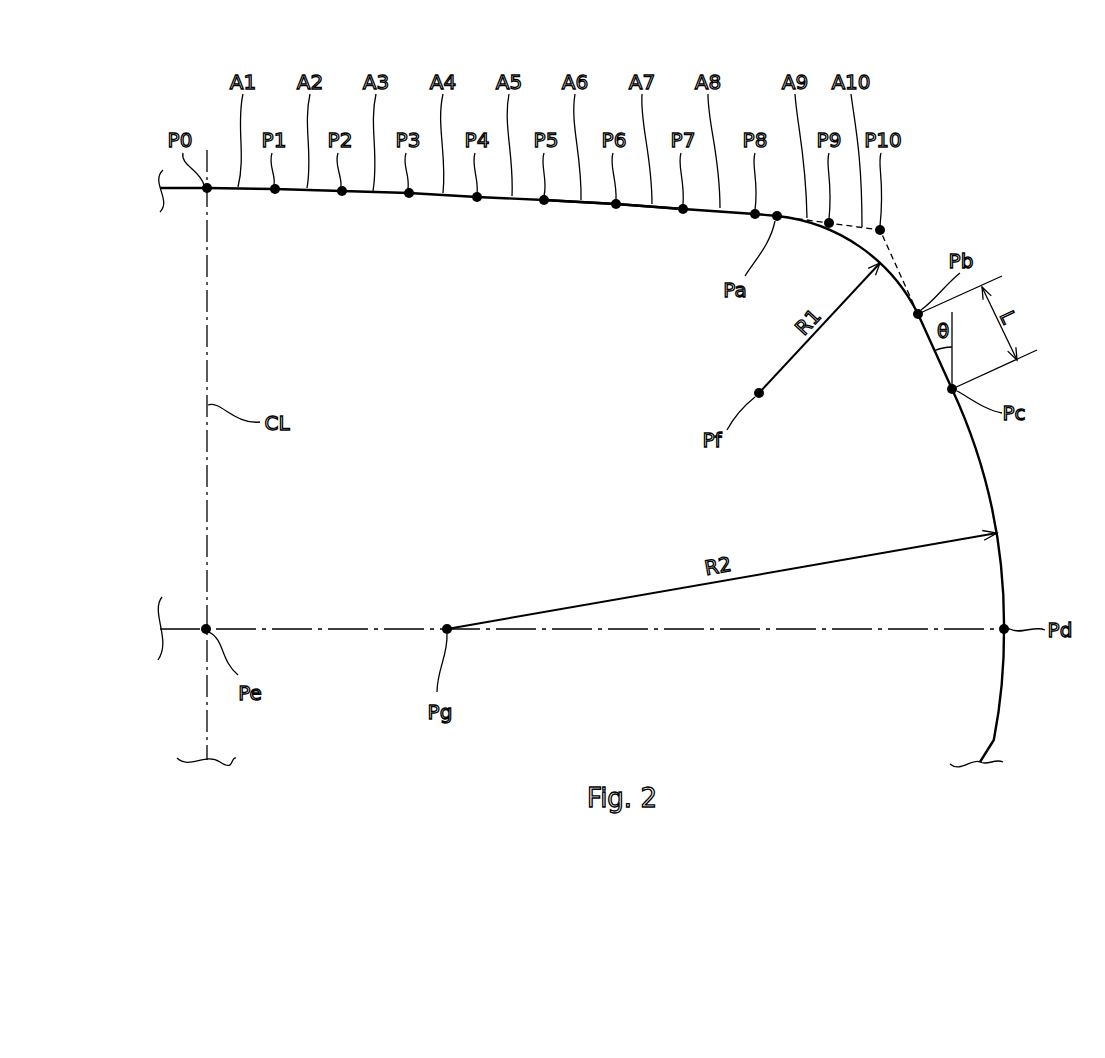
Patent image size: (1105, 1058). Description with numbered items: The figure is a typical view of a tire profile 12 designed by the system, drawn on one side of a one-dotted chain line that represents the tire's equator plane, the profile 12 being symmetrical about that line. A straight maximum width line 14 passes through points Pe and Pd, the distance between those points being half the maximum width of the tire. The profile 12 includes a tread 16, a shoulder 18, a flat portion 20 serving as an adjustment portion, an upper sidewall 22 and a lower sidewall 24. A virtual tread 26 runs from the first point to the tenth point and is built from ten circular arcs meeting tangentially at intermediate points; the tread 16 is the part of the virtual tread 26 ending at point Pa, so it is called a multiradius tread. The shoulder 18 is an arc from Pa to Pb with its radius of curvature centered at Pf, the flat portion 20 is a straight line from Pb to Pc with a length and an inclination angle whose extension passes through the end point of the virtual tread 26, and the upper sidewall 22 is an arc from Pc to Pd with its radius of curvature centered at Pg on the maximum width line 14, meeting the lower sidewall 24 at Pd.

The tire profile 12 is at (908, 244).
The maximum width line 14 is at (630, 633).
The tread 16 is at (496, 211).
The shoulder 18 is at (842, 237).
The flat portion 20 is at (928, 337).
The upper sidewall 22 is at (985, 471).
The lower sidewall 24 is at (998, 705).
The virtual tread 26 is at (638, 212).